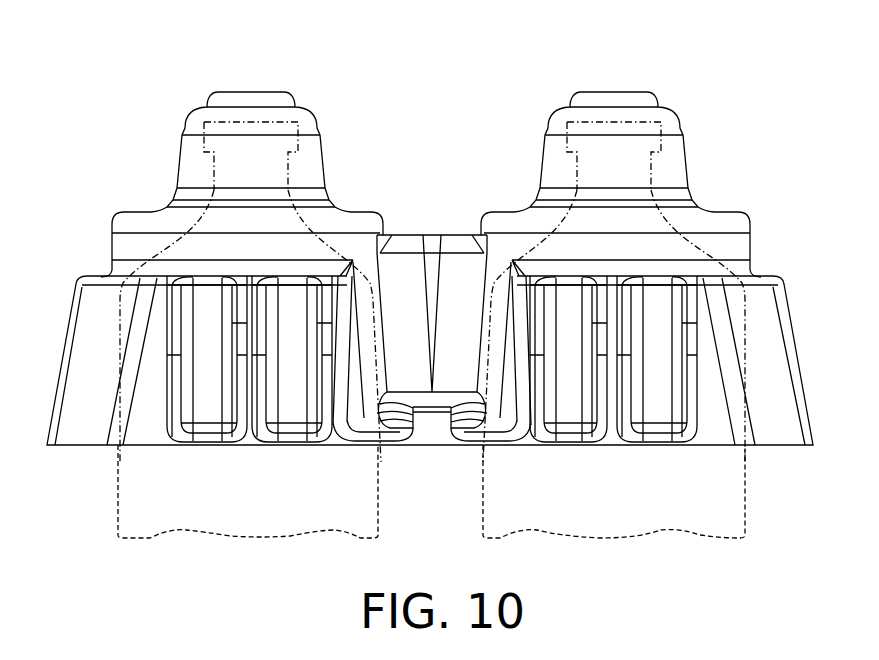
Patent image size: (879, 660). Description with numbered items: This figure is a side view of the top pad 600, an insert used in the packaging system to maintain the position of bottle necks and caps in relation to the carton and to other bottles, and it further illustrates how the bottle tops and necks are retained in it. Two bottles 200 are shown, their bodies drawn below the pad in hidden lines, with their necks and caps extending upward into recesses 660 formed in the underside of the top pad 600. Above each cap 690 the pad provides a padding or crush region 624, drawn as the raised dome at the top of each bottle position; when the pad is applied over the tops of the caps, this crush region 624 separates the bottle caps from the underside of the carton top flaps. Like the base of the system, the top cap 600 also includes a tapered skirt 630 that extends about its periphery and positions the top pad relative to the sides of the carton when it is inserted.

The top pad 600 is at (672, 60).
The padding/crush region 624 is at (287, 95).
The cap 690 is at (663, 148).
The recess 660 is at (430, 425).
The bottle 200 is at (115, 448).
The tapered skirt 630 is at (47, 445).